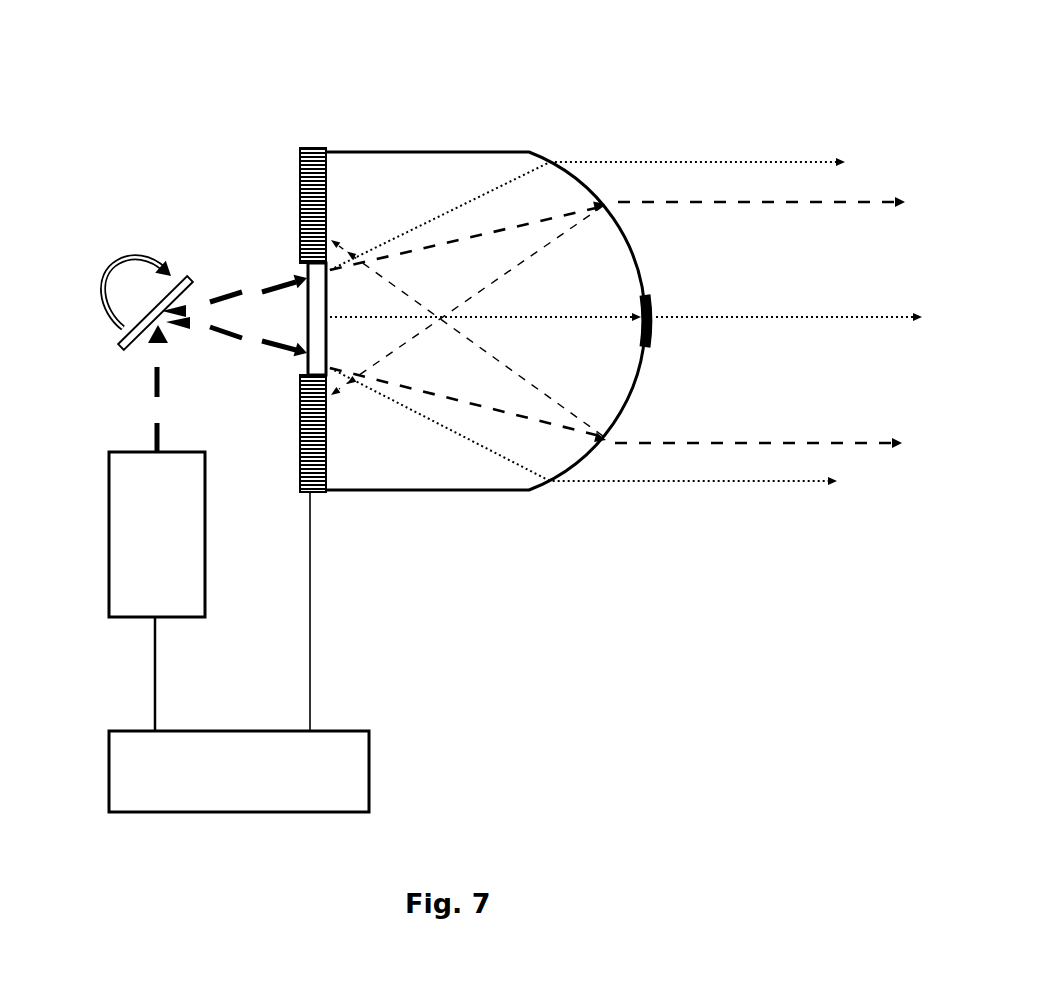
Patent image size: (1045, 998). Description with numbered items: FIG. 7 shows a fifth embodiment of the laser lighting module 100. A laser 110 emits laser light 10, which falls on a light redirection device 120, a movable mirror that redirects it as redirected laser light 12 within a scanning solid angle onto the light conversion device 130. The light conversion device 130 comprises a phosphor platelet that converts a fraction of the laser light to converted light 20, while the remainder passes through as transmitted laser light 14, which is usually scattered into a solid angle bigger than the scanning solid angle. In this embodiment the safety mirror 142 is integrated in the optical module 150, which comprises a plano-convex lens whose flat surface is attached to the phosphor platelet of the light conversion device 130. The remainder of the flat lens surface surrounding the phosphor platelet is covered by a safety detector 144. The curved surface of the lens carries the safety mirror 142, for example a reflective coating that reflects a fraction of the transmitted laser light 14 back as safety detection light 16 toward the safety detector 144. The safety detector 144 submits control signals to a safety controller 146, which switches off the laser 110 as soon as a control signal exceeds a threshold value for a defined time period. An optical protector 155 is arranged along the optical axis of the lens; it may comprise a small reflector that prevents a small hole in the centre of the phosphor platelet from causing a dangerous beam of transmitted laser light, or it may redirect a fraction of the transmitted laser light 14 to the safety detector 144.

The laser lighting module 100 is at (122, 75).
The laser 110 is at (109, 533).
The laser light 10 is at (157, 412).
The light redirection device 120 is at (183, 272).
The redirected laser light 12 is at (237, 340).
The light conversion device 130 is at (305, 265).
The safety detector 144 is at (300, 420).
The safety controller 146 is at (369, 770).
The optical module 150 is at (548, 493).
The safety mirror 142 is at (602, 198).
The optical protector 155 is at (652, 338).
The converted light 20 is at (843, 322).
The transmitted laser light 14 is at (867, 207).
The safety detection light 16 is at (530, 260).